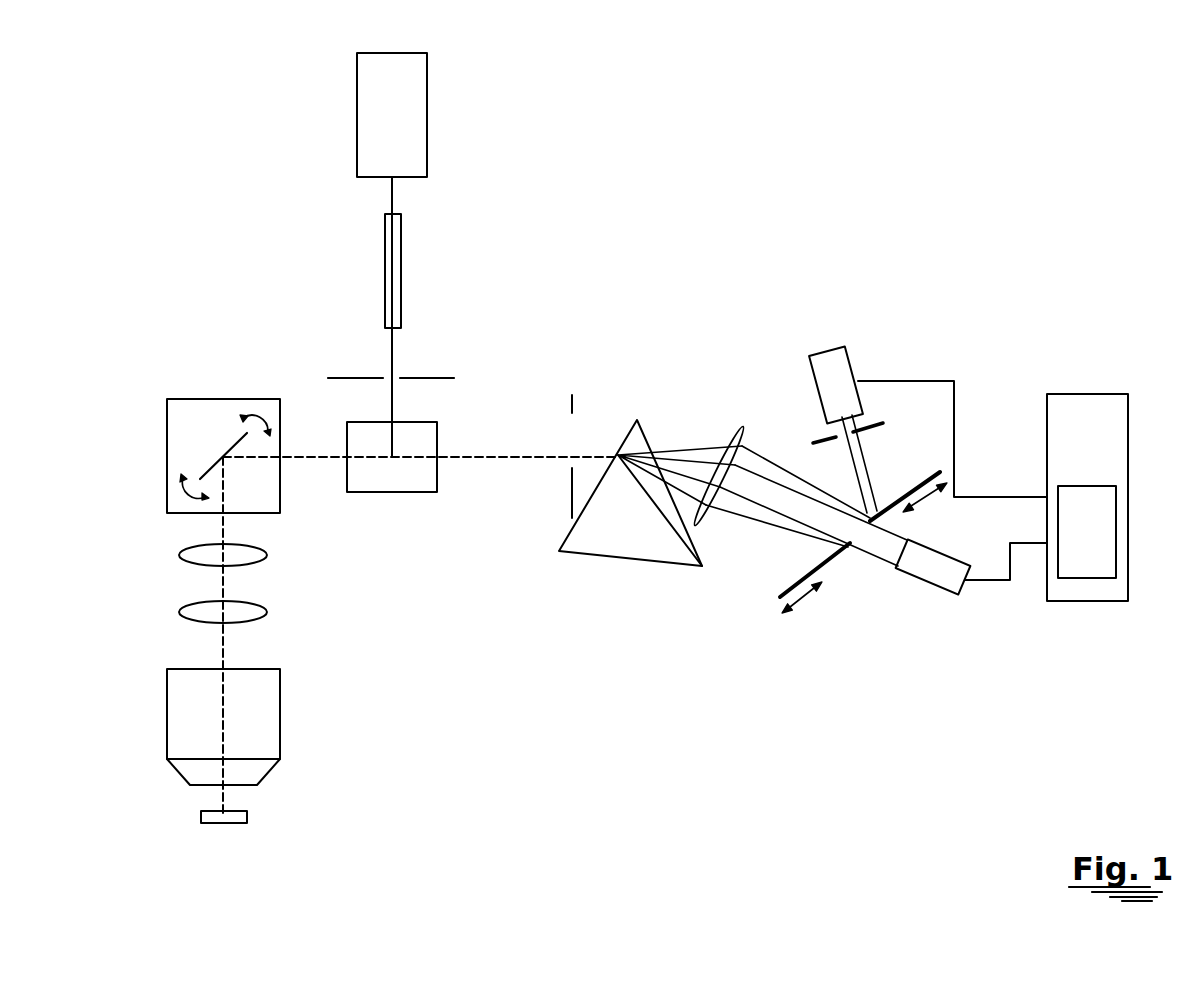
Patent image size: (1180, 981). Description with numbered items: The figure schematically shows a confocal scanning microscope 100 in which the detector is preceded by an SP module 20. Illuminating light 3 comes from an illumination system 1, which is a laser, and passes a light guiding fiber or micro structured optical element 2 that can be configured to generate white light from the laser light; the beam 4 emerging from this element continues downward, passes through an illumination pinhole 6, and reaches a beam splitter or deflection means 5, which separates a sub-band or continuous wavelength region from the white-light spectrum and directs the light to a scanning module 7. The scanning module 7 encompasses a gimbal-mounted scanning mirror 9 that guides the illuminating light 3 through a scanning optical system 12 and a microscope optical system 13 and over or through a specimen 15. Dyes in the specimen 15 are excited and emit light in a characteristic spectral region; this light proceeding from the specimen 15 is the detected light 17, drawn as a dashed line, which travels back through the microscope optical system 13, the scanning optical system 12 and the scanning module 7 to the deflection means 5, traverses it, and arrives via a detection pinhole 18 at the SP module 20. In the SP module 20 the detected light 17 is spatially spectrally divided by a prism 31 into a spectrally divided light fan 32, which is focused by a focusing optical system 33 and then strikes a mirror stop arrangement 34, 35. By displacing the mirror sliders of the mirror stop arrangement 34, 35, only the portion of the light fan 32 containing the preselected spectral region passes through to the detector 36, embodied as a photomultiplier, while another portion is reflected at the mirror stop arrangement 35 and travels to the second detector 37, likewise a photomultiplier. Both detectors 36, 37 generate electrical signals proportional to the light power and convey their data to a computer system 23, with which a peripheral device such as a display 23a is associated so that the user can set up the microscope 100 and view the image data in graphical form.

The illumination system 1 is at (415, 93).
The micro structured optical element 2 is at (385, 280).
The illuminating light 3 is at (392, 196).
The modulated light beam 4 is at (392, 351).
The deflection means 5 is at (372, 488).
The illumination pinhole 6 is at (347, 380).
The scanning module 7 is at (190, 422).
The scanning mirror 9 is at (212, 463).
The scanning optical system 12 is at (202, 555).
The microscope optical system 13 is at (190, 697).
The specimen 15 is at (215, 815).
The detected light 17 is at (450, 455).
The detection pinhole 18 is at (572, 414).
The SP module 20 is at (769, 409).
The computer system 23 is at (1107, 415).
The display 23a is at (1082, 574).
The prism 31 is at (633, 550).
The spectrally divided light fan 32 is at (675, 453).
The focusing optical system 33 is at (695, 524).
The mirror stop arrangement 34 is at (840, 549).
The mirror stop arrangement 35 is at (900, 497).
The detector 36 is at (907, 568).
The detector 37 is at (820, 360).
The confocal scanning microscope 100 is at (469, 338).